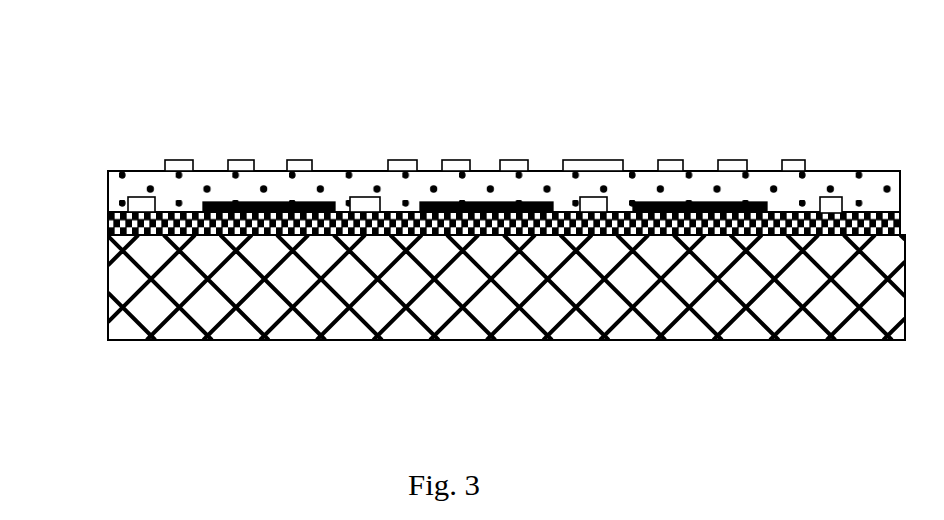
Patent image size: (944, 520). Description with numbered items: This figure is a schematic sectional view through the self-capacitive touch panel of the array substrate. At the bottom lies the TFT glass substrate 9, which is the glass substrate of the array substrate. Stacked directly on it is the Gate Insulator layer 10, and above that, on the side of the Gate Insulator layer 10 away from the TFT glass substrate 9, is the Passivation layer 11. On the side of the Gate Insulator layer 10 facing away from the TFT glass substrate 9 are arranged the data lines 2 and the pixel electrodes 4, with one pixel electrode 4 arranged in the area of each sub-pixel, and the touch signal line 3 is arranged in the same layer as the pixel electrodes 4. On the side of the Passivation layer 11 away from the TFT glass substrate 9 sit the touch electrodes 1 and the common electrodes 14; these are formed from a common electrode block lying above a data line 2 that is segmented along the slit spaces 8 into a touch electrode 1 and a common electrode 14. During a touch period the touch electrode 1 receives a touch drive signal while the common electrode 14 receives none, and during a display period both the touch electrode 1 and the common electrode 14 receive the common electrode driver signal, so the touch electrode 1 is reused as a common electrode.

The touch electrode 1 is at (182, 165).
The data line 2 is at (143, 205).
The touch signal line 3 is at (832, 205).
The pixel electrode 4 is at (271, 205).
The slit space 8 is at (208, 166).
The TFT glass substrate 9 is at (117, 286).
The Gate Insulator layer 10 is at (118, 222).
The Passivation layer 11 is at (118, 191).
The common electrode 14 is at (597, 165).